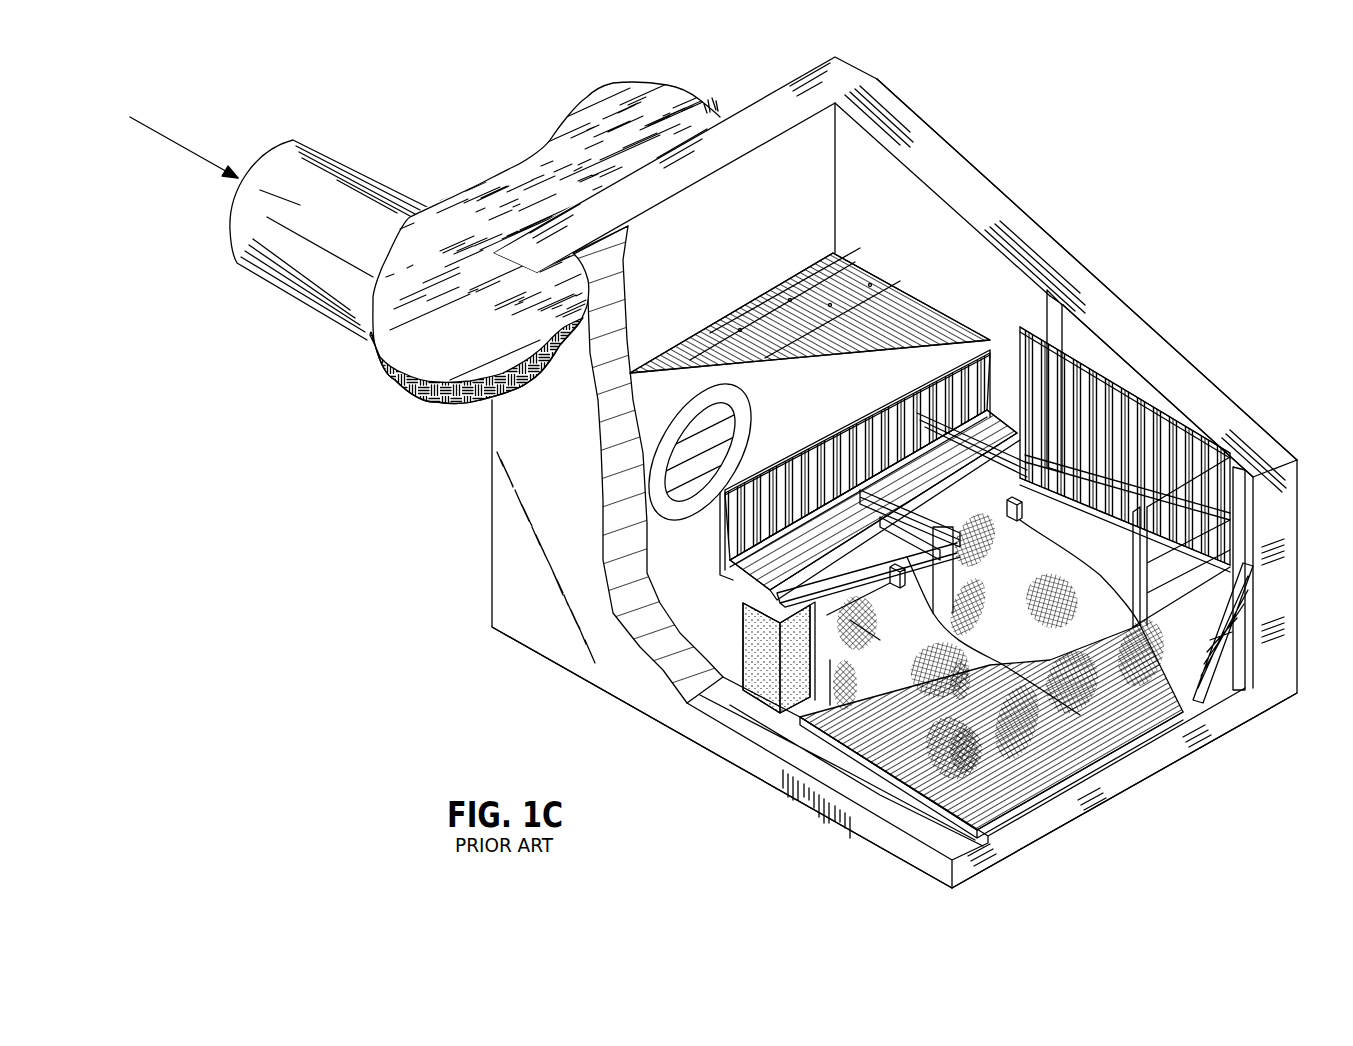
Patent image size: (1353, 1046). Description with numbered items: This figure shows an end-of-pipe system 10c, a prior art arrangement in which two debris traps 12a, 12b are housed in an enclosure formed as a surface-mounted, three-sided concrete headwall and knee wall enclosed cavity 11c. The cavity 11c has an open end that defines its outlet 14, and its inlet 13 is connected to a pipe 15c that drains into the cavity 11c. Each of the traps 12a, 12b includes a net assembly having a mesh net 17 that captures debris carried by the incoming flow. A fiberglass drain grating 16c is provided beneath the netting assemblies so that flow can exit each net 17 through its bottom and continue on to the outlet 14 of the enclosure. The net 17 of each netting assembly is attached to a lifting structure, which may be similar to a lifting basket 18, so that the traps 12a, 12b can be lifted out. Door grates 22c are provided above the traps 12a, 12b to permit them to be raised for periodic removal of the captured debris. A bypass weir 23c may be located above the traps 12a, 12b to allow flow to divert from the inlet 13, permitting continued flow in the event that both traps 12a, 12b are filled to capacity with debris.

The end-of-pipe system 10c is at (1185, 162).
The cavity 11c is at (993, 196).
The trap 12a is at (990, 688).
The trap 12b is at (1095, 607).
The inlet 13 is at (740, 418).
The outlet 14 is at (1072, 826).
The pipe 15c is at (308, 204).
The fiberglass drain grating 16c is at (1173, 658).
The mesh net 17 is at (900, 695).
The lifting basket 18 is at (885, 590).
The door grates 22c is at (1148, 393).
The bypass weir 23c is at (998, 362).